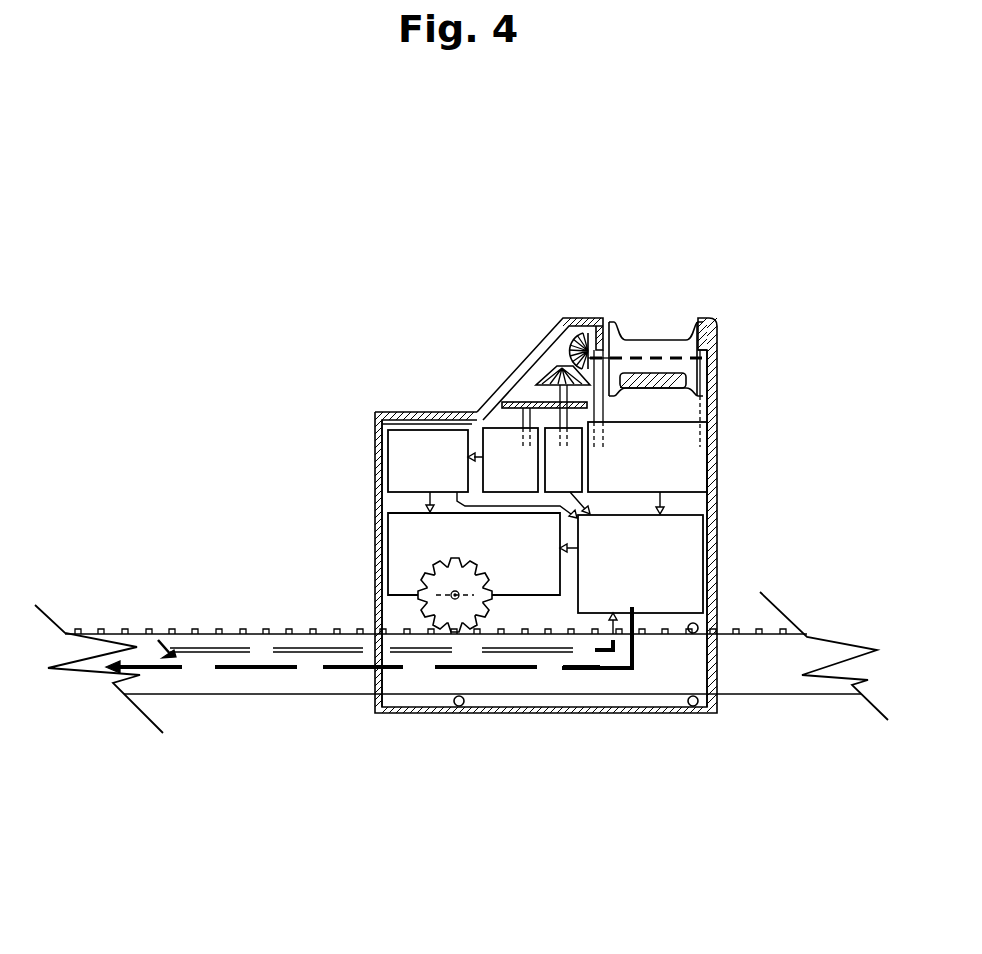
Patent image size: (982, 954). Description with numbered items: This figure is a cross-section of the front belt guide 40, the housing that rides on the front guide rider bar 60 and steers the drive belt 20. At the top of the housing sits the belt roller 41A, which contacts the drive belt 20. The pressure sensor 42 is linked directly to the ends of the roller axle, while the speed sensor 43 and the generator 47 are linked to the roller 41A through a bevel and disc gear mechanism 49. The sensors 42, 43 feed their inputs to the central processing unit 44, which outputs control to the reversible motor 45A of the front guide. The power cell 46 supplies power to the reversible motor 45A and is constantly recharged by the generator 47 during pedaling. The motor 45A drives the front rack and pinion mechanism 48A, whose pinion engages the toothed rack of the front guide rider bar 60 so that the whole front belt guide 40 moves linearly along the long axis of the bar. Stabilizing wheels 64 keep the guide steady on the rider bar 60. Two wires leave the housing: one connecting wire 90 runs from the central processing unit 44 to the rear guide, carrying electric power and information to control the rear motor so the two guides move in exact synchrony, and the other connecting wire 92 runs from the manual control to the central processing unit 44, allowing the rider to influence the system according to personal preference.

The front belt guide 40 is at (384, 406).
The belt roller of front guide 41A is at (657, 340).
The drive belt 20 is at (675, 388).
The pressure sensor 42 is at (683, 455).
The speed sensor 43 is at (553, 435).
The central processing unit 44 is at (680, 565).
The reversible motor of front guide 45A is at (402, 538).
The power cell 46 is at (400, 456).
The generator 47 is at (503, 433).
The front rack and pinion mechanism 48A is at (423, 623).
The bevel and disc gear mechanism 49 is at (556, 365).
The front guide rider bar 60 is at (320, 682).
The stabilizing wheels 64 is at (477, 724).
The connecting wire 90 is at (257, 667).
The connecting wire 92 is at (193, 650).